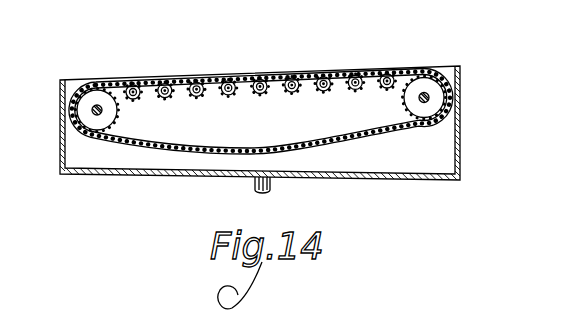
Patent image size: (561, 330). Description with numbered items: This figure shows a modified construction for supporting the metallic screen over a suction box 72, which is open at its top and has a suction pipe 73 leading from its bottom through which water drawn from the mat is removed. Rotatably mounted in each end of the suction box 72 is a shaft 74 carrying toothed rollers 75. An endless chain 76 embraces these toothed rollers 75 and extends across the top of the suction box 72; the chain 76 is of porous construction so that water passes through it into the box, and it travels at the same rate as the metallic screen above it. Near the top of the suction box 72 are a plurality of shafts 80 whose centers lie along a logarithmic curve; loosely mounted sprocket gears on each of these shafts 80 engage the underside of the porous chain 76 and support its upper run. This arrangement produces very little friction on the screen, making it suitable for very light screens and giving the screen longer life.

The suction box 72 is at (461, 136).
The suction pipe 73 is at (254, 183).
The shaft 74 is at (103, 110).
The toothed rollers 75 is at (96, 126).
The endless chain 76 is at (326, 147).
The shafts 80 is at (132, 80).